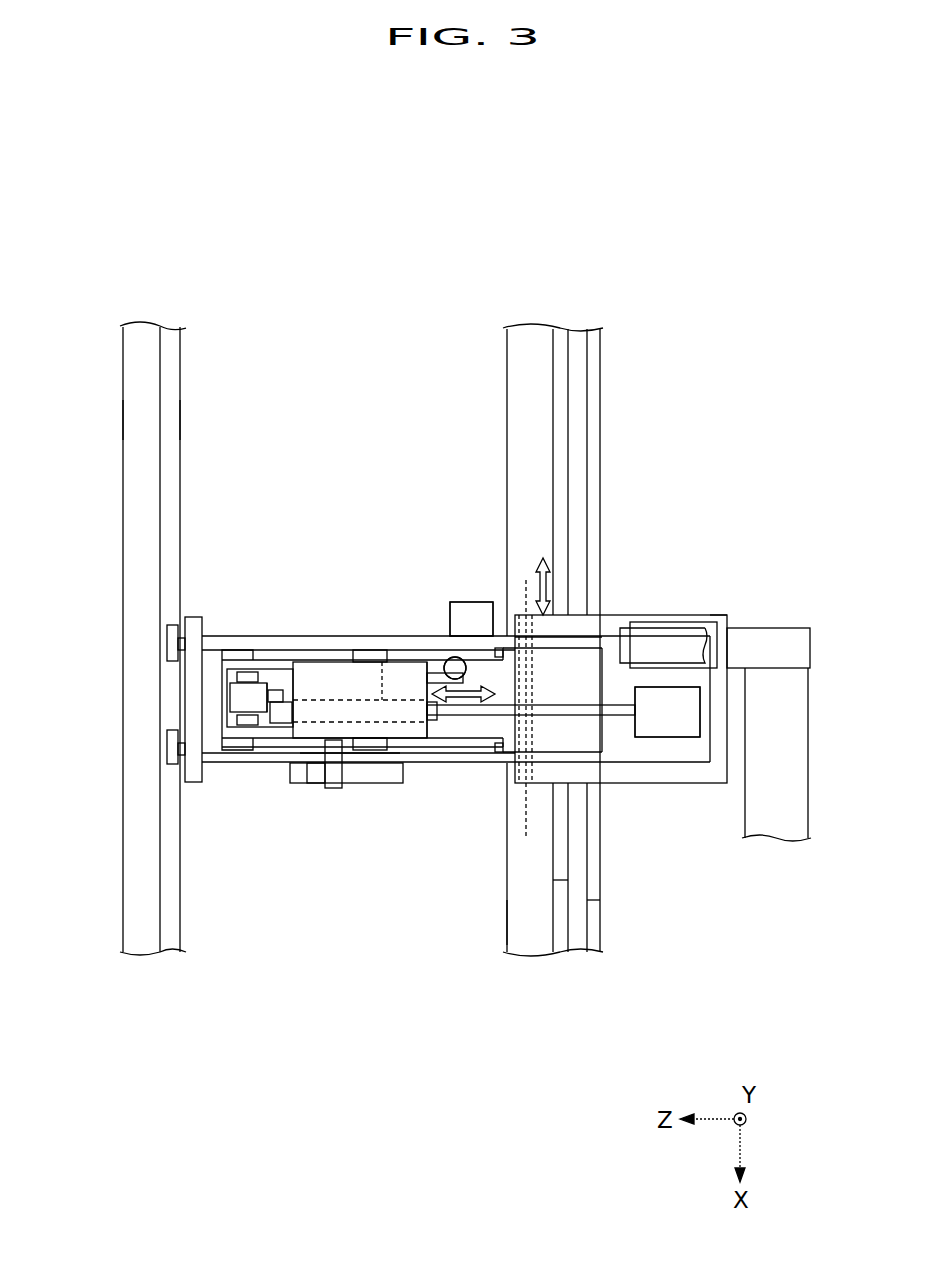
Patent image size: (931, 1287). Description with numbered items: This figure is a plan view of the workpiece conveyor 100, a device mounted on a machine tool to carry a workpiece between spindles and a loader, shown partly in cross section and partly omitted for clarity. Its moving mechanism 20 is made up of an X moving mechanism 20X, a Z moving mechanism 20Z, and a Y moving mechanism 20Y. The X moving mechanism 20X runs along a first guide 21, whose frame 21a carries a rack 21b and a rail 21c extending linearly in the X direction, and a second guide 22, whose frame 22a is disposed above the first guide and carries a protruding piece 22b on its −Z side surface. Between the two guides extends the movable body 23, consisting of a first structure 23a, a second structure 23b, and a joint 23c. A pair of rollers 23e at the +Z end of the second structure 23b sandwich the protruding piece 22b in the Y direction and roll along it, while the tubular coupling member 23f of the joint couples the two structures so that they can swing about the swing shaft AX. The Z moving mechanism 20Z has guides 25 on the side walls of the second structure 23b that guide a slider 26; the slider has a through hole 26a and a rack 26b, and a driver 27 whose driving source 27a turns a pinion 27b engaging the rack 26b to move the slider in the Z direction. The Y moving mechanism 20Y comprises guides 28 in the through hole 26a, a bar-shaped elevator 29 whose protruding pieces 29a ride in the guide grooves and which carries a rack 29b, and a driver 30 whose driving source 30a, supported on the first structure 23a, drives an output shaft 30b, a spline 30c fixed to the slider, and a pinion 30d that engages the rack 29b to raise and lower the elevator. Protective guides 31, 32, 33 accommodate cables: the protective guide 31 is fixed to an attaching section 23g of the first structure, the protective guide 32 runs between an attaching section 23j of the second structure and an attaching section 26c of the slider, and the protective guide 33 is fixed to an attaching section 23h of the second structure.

The workpiece conveyor 100 is at (713, 175).
The moving mechanism 20 is at (738, 482).
The X moving mechanism 20X is at (728, 582).
The Y moving mechanism 20Y is at (215, 690).
The Z moving mechanism 20Z is at (320, 642).
The first guide 21 is at (548, 1000).
The frame 21a is at (507, 936).
The rack 21b is at (597, 925).
The rail 21c is at (560, 884).
The second guide 22 is at (150, 1000).
The frame 22a is at (123, 423).
The protruding piece 22b is at (180, 420).
The movable body 23 is at (668, 800).
The first structure 23a is at (665, 790).
The second structure 23b is at (413, 743).
The joint 23c is at (545, 670).
The rollers 23e is at (167, 643).
The coupling member 23f is at (521, 820).
The attaching section 23g is at (803, 652).
The attaching section 23h is at (712, 618).
The attaching section 23j is at (385, 770).
The guides 25 is at (430, 745).
The slider 26 is at (342, 668).
The through hole 26a is at (356, 652).
The rack 26b is at (398, 760).
The attaching section 26c is at (372, 763).
The driver 27 is at (483, 582).
The driving source 27a is at (461, 602).
The pinion 27b is at (455, 690).
The guides 28 is at (245, 755).
The elevator 29 is at (268, 730).
The protruding pieces 29a is at (250, 715).
The rack 29b is at (266, 690).
The driver 30 is at (692, 670).
The driving source 30a is at (652, 695).
The output shaft 30b is at (615, 712).
The spline 30c is at (382, 700).
The pinion 30d is at (294, 783).
The protective guide 31 is at (800, 770).
The protective guide 32 is at (318, 788).
The protective guide 33 is at (675, 635).
The swing shaft AX is at (507, 880).